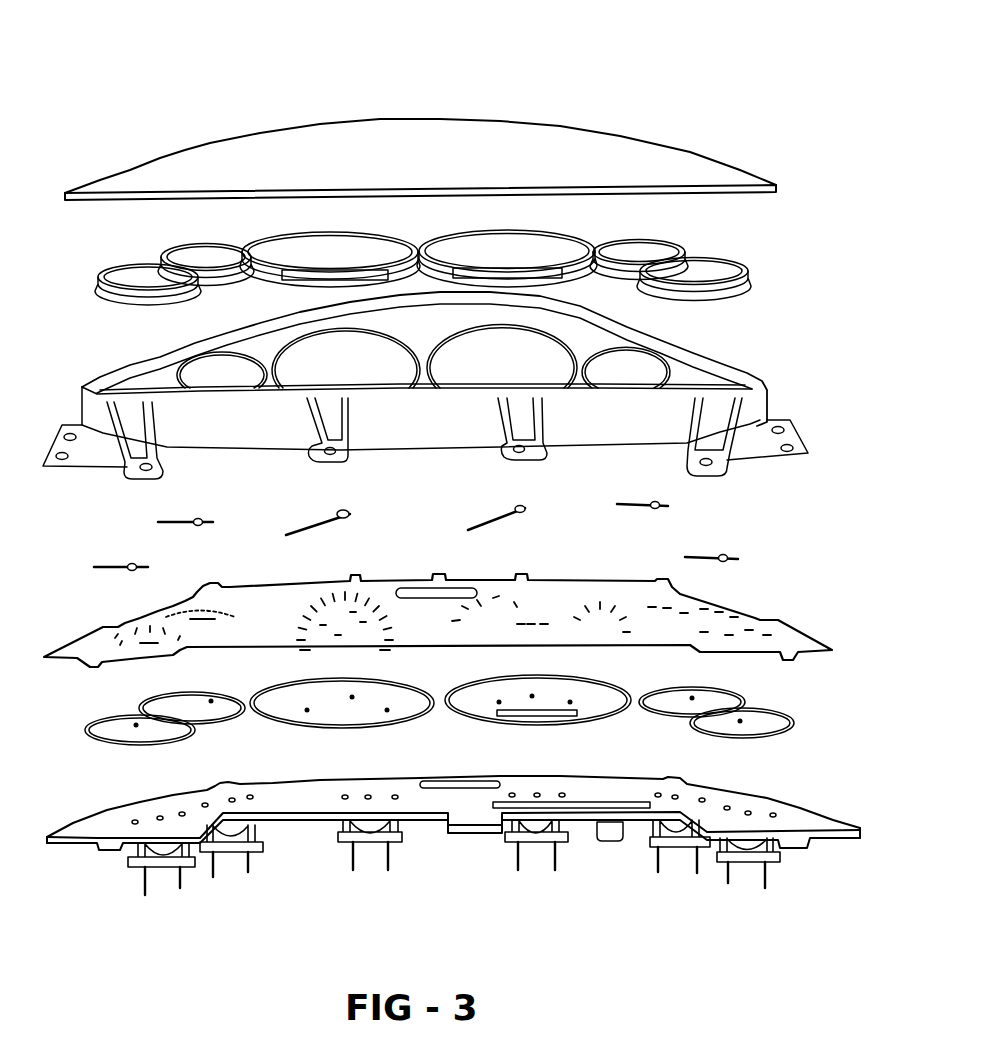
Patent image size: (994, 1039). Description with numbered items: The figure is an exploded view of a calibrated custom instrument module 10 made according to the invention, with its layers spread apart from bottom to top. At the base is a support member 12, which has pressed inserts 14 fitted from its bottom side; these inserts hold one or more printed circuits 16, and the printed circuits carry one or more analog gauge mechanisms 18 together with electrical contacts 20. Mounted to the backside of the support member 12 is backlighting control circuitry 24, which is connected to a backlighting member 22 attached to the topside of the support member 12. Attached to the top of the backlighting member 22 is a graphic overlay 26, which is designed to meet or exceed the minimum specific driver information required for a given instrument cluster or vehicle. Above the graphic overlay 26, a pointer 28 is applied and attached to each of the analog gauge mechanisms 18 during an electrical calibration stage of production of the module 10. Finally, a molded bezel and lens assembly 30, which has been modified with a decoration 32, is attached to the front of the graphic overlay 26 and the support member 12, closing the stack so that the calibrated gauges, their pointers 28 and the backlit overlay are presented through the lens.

The custom instrument module 10 is at (737, 100).
The support member 12 is at (830, 842).
The pressed inserts 14 is at (147, 892).
The printed circuits 16 is at (415, 866).
The analog gauge mechanisms 18 is at (375, 835).
The electrical contacts 20 is at (150, 888).
The backlighting member 22 is at (795, 728).
The backlighting control circuitry 24 is at (623, 835).
The graphic overlay 26 is at (786, 633).
The pointer 28 is at (625, 505).
The molded bezel and lens assembly 30 is at (100, 184).
The decoration 32 is at (116, 279).